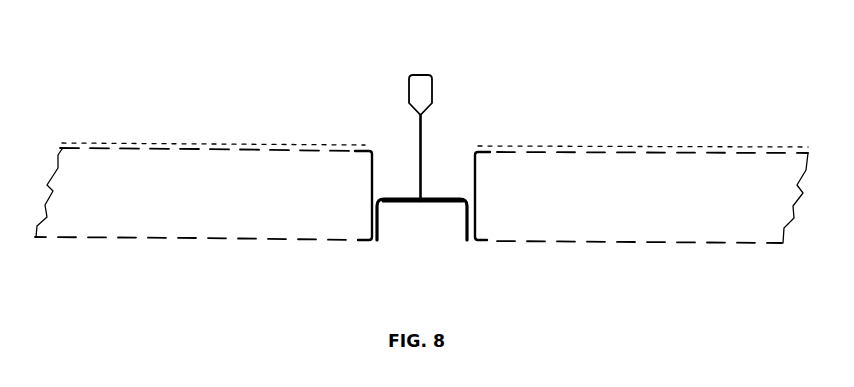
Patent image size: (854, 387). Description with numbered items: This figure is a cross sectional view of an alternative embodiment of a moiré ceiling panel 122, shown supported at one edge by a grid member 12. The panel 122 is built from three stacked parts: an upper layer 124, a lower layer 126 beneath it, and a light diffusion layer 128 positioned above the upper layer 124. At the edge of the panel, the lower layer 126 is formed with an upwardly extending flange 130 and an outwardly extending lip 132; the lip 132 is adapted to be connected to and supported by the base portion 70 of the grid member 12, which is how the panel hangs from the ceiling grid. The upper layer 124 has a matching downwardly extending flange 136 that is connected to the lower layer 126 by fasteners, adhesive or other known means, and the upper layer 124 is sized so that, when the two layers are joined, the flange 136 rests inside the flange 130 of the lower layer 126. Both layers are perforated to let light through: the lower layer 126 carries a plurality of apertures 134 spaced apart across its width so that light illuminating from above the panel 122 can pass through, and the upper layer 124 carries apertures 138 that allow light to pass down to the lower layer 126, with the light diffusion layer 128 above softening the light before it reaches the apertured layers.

The moiré ceiling panel 122 is at (78, 86).
The apertures 138 is at (144, 150).
The light diffusion layer 128 is at (212, 143).
The upper layer 124 is at (336, 152).
The apertures 134 is at (173, 240).
The lower layer 126 is at (312, 242).
The downwardly extending flange 136 is at (369, 183).
The outwardly extending lip 132 is at (398, 199).
The upwardly extending flange 130 is at (380, 220).
The base portion 70 is at (412, 207).
The grid member 12 is at (425, 128).